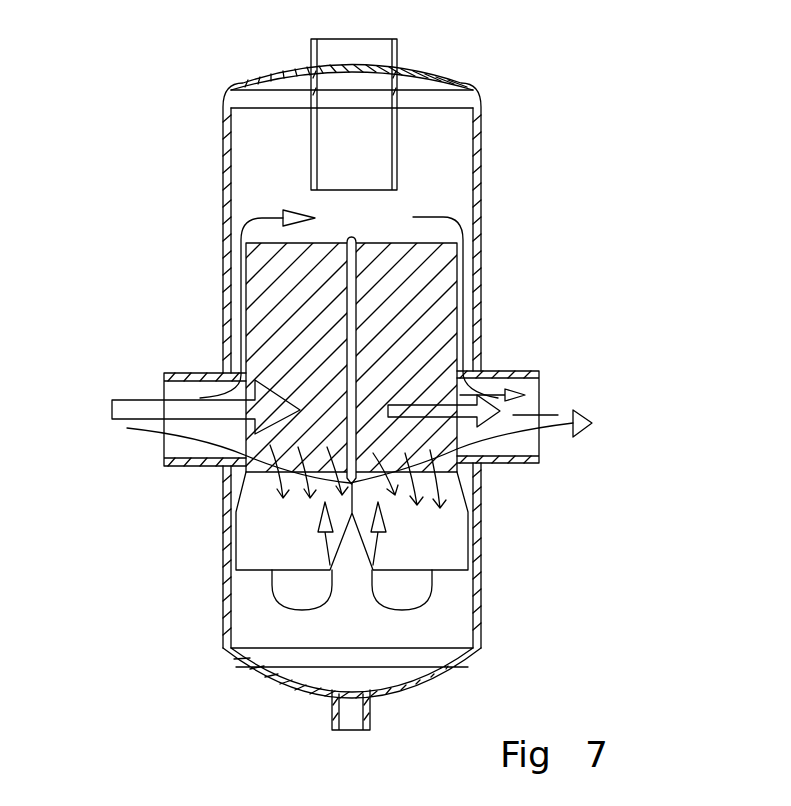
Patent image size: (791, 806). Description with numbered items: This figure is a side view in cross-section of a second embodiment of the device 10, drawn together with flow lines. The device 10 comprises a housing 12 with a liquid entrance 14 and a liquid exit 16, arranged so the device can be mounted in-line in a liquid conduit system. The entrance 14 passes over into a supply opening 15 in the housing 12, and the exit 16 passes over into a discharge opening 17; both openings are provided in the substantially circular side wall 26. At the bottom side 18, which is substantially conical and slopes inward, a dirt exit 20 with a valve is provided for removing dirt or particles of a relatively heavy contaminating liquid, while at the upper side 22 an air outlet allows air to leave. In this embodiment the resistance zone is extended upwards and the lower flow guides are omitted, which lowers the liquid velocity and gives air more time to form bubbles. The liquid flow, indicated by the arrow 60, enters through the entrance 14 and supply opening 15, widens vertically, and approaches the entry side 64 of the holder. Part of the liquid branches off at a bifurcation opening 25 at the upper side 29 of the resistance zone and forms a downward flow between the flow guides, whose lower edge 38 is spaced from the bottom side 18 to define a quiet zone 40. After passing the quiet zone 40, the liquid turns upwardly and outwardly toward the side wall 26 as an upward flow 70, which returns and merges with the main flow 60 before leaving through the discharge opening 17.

The device 10 is at (596, 147).
The housing 12 is at (227, 152).
The liquid entrance 14 is at (163, 375).
The supply opening 15 is at (246, 421).
The liquid exit 16 is at (540, 370).
The discharge opening 17 is at (498, 380).
The bottom side 18 is at (295, 695).
The dirt exit 20 is at (370, 720).
The upper side 22 is at (445, 75).
The bifurcation opening 25 is at (245, 508).
The side wall 26 is at (227, 212).
The upper side of the resistance zone 29 is at (375, 242).
The lower edge of the flow guides 38 is at (253, 560).
The quiet zone 40 is at (270, 148).
The main flow 60 is at (138, 407).
The entry side of the holder 64 is at (273, 277).
The upward flow 70 is at (280, 612).